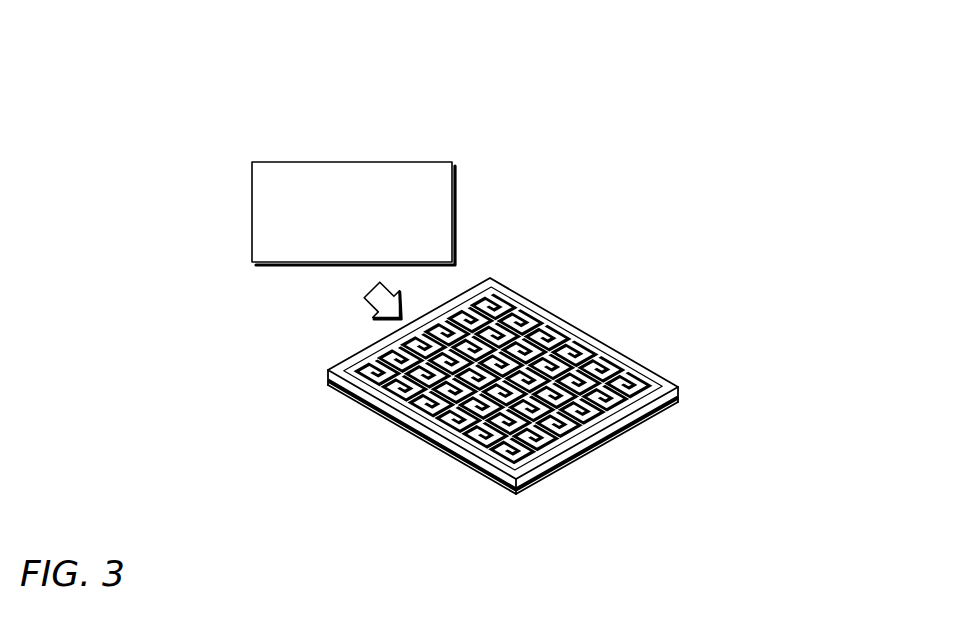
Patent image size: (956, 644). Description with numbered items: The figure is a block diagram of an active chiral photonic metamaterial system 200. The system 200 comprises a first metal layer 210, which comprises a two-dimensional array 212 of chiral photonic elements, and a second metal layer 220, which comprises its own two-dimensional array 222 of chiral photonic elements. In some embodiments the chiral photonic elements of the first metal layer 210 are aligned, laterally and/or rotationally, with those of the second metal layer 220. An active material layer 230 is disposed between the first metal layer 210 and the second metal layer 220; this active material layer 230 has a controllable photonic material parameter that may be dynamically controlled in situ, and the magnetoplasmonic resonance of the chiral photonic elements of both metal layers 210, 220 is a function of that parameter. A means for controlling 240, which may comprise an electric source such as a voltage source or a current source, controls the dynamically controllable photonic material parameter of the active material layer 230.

The active photonic metamaterial system 200 is at (708, 83).
The first metal layer 210 is at (630, 360).
The 2-dimensional array of chiral photonic elements 212 is at (566, 322).
The second metal layer 220 is at (633, 430).
The 2-dimensional array of chiral photonic elements 222 is at (564, 472).
The active material layer 230 is at (679, 394).
The means for controlling 240 is at (351, 162).